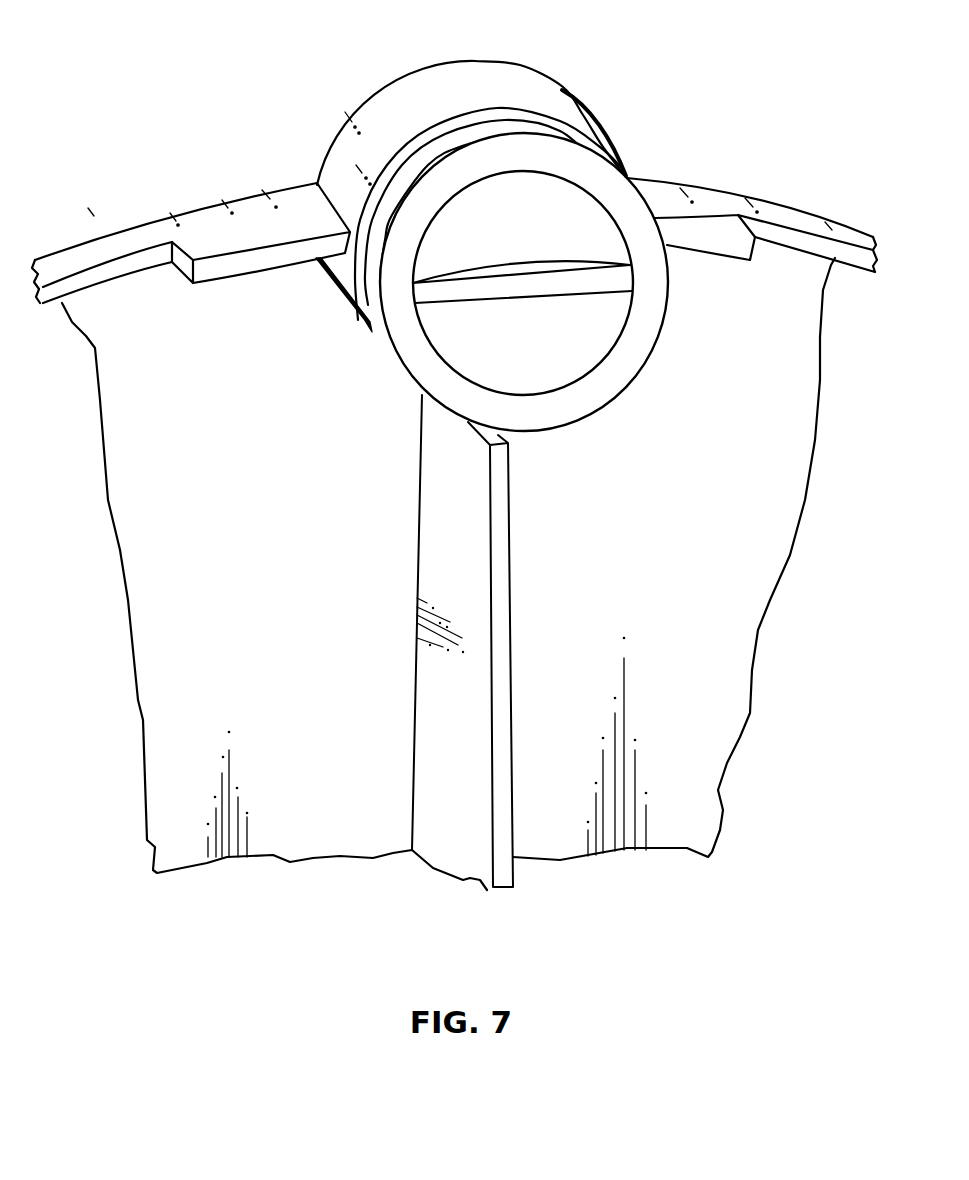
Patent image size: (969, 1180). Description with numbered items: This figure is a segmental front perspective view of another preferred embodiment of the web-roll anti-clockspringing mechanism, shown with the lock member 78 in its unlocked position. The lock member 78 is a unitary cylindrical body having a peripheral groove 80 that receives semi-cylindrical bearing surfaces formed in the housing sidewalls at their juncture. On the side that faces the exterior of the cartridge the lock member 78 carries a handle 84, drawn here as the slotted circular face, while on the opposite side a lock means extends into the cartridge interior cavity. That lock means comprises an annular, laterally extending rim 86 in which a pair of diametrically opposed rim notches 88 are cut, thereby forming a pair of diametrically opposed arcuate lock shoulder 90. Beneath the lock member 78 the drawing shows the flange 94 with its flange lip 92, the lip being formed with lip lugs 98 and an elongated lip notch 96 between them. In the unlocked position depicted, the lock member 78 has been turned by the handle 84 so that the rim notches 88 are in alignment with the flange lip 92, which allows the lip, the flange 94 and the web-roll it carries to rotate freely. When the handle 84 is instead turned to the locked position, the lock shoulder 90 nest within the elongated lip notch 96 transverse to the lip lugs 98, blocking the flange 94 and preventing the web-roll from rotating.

The lock member 78 is at (458, 222).
The peripheral groove 80 is at (443, 127).
The handle 84 is at (603, 283).
The rim 86 is at (336, 137).
The rim notches 88 is at (318, 186).
The lock shoulder 90 is at (377, 120).
The flange lip 92 is at (454, 255).
The flange 94 is at (282, 548).
The lip notch 96 is at (80, 280).
The lip lugs 98 is at (252, 260).